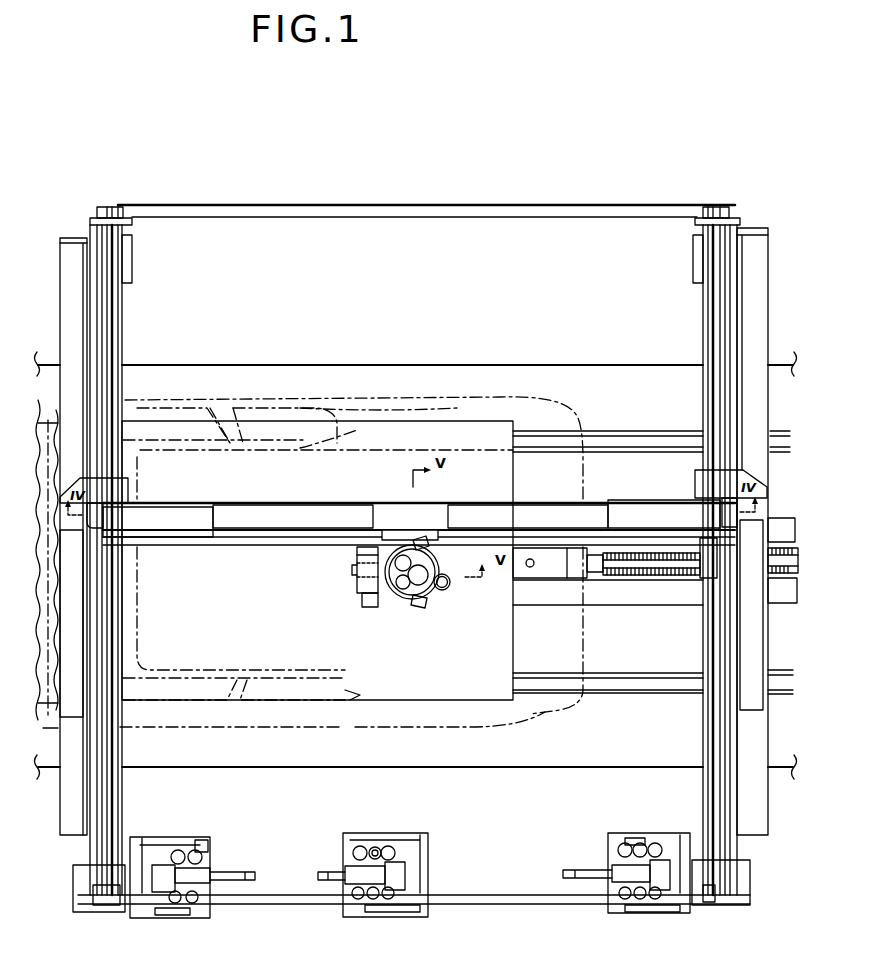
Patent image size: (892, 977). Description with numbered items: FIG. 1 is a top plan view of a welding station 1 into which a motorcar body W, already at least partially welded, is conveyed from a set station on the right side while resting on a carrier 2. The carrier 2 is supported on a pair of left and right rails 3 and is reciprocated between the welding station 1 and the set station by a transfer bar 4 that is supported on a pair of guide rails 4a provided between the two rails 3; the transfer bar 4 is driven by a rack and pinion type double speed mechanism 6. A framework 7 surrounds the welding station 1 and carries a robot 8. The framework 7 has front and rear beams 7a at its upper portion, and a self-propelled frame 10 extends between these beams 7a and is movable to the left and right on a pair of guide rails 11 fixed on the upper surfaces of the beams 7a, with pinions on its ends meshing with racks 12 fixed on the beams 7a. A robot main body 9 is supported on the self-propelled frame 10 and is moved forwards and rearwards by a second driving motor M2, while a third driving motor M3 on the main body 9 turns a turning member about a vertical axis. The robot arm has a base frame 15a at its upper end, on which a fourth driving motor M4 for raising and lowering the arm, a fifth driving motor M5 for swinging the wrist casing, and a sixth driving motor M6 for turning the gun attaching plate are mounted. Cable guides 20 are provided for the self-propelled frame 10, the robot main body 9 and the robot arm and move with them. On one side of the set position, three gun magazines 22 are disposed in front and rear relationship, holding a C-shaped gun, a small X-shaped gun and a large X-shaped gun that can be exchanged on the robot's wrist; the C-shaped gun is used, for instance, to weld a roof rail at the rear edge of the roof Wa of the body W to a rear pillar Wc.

The welding station 1 is at (410, 267).
The carrier 2 is at (485, 702).
The rails 3 is at (665, 440).
The transfer bar 4 is at (556, 578).
The guide rails 4a is at (782, 527).
The rack and pinion type double speed mechanism 6 is at (593, 580).
The framework 7 is at (762, 841).
The beams 7a is at (118, 788).
The robot 8 is at (400, 605).
The robot main body 9 is at (433, 548).
The self-propelled frame 10 is at (645, 512).
The guide rails 11 is at (712, 306).
The racks 12 is at (102, 348).
The base frame 15a is at (402, 603).
The cable guides 20 is at (552, 508).
The gun magazines 22 is at (203, 840).
The second driving motor M2 is at (360, 581).
The third driving motor M3 is at (432, 578).
The fourth driving motor M4 is at (412, 597).
The fifth driving motor M5 is at (403, 555).
The sixth driving motor M6 is at (390, 595).
The motorcar body W is at (221, 398).
The roof Wa is at (310, 445).
The rear pillar Wc is at (350, 717).